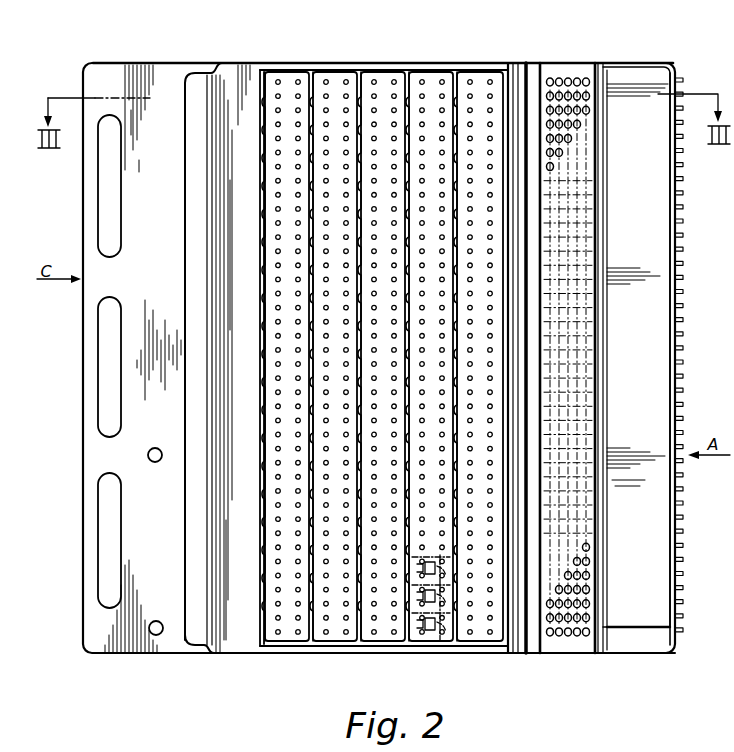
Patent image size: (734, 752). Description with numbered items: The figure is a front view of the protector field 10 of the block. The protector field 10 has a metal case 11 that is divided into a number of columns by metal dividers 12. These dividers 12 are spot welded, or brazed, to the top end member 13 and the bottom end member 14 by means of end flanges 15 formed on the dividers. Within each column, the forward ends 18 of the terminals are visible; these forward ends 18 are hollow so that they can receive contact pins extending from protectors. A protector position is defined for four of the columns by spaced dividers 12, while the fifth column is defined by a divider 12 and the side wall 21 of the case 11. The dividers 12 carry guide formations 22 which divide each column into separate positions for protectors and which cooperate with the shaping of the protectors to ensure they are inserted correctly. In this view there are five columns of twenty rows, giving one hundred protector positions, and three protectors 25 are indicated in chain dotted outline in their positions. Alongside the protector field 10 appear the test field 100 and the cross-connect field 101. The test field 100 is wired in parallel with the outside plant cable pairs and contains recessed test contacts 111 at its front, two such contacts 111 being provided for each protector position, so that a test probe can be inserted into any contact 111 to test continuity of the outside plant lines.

The protector field 10 is at (408, 57).
The metal case 11 is at (236, 87).
The metal divider 12 is at (314, 642).
The top end member 13 is at (352, 68).
The bottom end member 14 is at (366, 641).
The end flange 15 is at (326, 69).
The forward end of terminal 18 is at (297, 637).
The side wall 21 is at (505, 631).
The guide formation 22 is at (411, 128).
The protector 25 is at (445, 632).
The test field 100 is at (583, 72).
The cross-connect field 101 is at (685, 282).
The test contact 111 is at (586, 77).